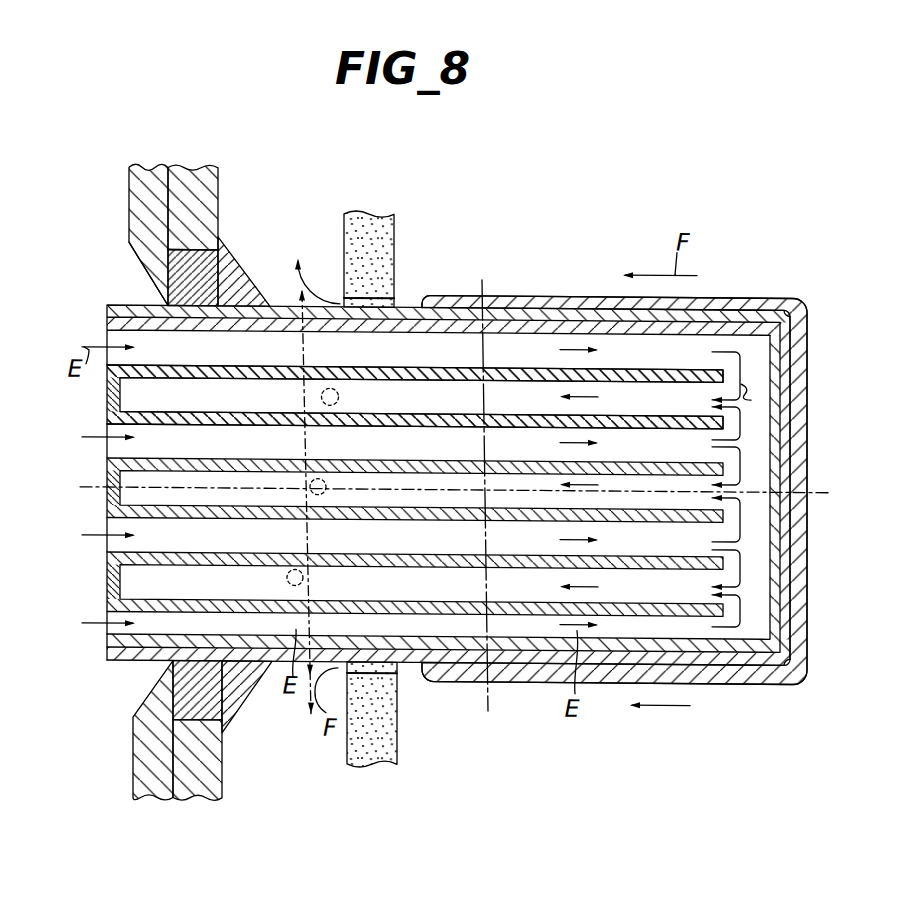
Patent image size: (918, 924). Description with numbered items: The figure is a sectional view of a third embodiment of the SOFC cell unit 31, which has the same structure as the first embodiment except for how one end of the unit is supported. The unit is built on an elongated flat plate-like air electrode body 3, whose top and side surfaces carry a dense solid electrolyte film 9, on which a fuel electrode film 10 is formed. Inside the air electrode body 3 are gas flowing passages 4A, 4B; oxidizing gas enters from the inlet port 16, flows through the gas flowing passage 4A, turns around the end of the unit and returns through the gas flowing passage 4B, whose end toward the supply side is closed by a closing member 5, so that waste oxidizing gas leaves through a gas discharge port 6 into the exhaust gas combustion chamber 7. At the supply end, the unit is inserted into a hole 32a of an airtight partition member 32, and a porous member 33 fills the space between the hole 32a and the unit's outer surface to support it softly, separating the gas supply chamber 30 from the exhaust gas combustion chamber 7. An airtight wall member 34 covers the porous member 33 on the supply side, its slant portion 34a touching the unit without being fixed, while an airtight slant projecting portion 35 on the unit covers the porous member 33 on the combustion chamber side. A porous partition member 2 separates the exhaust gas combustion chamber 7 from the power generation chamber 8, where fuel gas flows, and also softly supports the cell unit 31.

The porous partition member 2 is at (347, 221).
The air electrode body 3 is at (108, 318).
The gas flowing passage 4A is at (550, 355).
The gas flowing passage 4B is at (523, 400).
The closing member 5 is at (112, 394).
The gas discharge port 6 is at (333, 388).
The exhaust gas combustion chamber 7 is at (288, 243).
The power generation chamber 8 is at (526, 226).
The solid electrolyte film 9 is at (790, 359).
The fuel electrode film 10 is at (805, 332).
The inlet port 16 is at (106, 449).
The gas supply chamber 30 is at (45, 507).
The SOFC cell unit 31 is at (796, 290).
The airtight partition member 32 is at (218, 170).
The hole 32a is at (172, 249).
The porous member 33 is at (197, 253).
The airtight wall member 34 is at (133, 193).
The slant portion 34a is at (150, 262).
The airtight slant projecting portion 35 is at (225, 262).